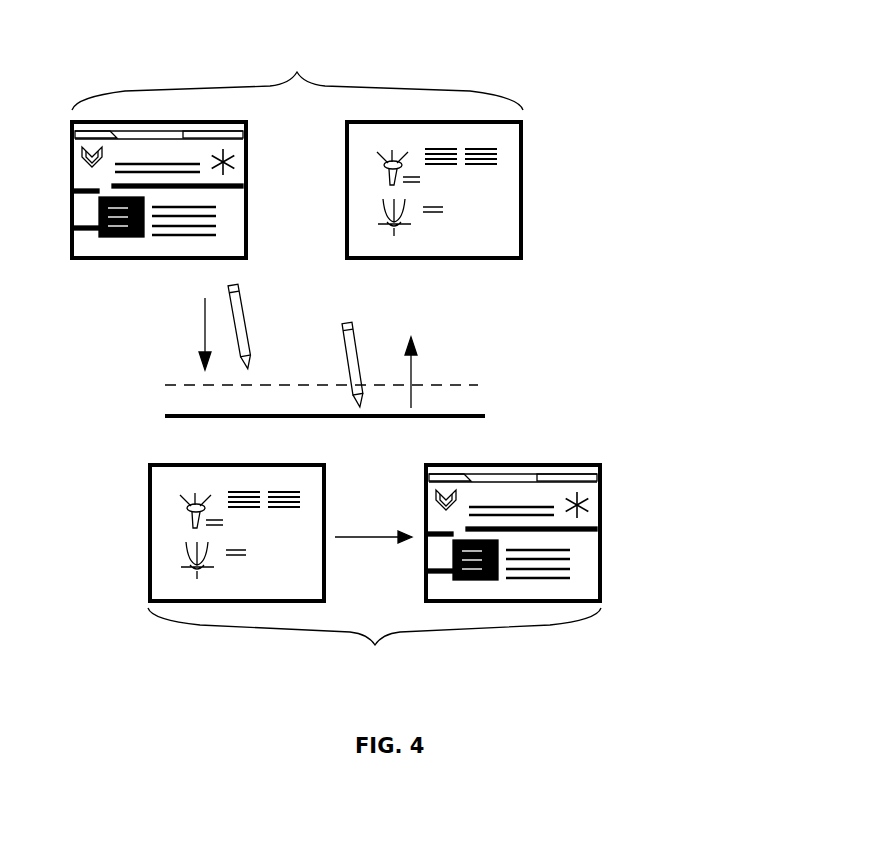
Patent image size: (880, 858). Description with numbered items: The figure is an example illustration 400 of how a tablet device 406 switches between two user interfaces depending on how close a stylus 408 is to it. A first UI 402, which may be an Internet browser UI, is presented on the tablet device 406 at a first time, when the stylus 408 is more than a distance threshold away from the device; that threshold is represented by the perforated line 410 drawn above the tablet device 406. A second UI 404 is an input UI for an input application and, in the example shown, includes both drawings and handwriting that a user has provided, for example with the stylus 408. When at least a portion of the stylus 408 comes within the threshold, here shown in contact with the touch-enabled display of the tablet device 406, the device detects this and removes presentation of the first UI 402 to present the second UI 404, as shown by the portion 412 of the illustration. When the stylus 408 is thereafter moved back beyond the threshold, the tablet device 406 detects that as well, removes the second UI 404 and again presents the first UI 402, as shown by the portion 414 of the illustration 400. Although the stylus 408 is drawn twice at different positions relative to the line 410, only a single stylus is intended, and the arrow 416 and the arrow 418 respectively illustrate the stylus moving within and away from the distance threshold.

The illustration 400 is at (645, 77).
The first UI 402 is at (103, 262).
The second UI 404 is at (525, 155).
The tablet device 406 is at (482, 413).
The stylus 408 is at (340, 340).
The perforated line 410 is at (165, 383).
The portion of the illustration 412 is at (297, 81).
The portion of the illustration 414 is at (374, 639).
The arrow 416 is at (201, 326).
The arrow 418 is at (415, 341).